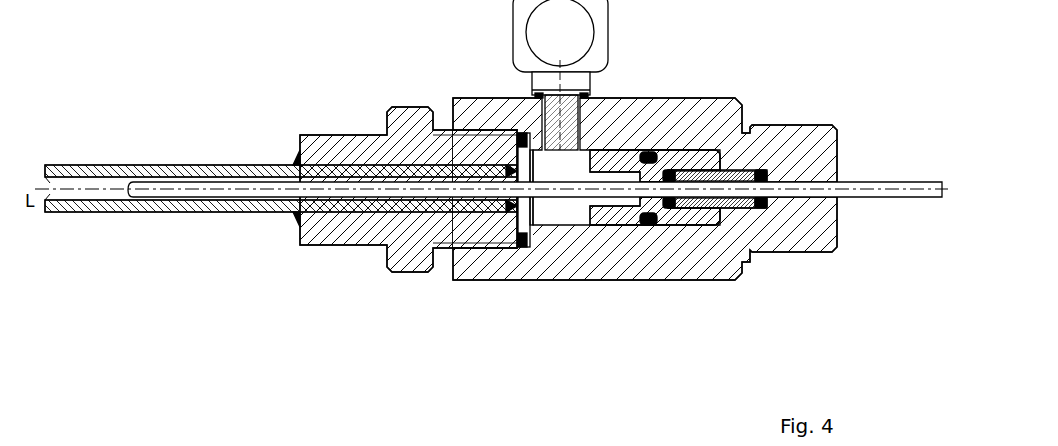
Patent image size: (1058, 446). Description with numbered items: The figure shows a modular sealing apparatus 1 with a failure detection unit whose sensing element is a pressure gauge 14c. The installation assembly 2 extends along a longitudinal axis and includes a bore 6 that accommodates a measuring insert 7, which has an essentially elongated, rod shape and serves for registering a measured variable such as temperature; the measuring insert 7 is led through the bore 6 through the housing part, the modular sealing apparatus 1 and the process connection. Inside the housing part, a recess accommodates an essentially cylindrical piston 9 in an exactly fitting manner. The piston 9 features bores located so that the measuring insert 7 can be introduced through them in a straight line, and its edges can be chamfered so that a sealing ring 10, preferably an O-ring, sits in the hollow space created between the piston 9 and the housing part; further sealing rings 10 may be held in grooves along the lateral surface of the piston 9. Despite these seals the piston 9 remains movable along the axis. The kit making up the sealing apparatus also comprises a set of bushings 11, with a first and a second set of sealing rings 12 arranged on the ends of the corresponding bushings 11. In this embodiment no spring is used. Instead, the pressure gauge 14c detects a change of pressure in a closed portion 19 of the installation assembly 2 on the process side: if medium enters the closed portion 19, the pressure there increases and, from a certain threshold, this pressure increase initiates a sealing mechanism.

The modular sealing apparatus 1 is at (196, 0).
The installation assembly 2 is at (769, 99).
The bore 6 is at (94, 189).
The measuring insert 7 is at (904, 181).
The piston 9 is at (609, 217).
The sealing ring 10 is at (651, 222).
The bushing 11 is at (720, 178).
The sealing ring 12 is at (674, 180).
The pressure gauge 14c is at (586, 97).
The closed portion 19 is at (543, 209).